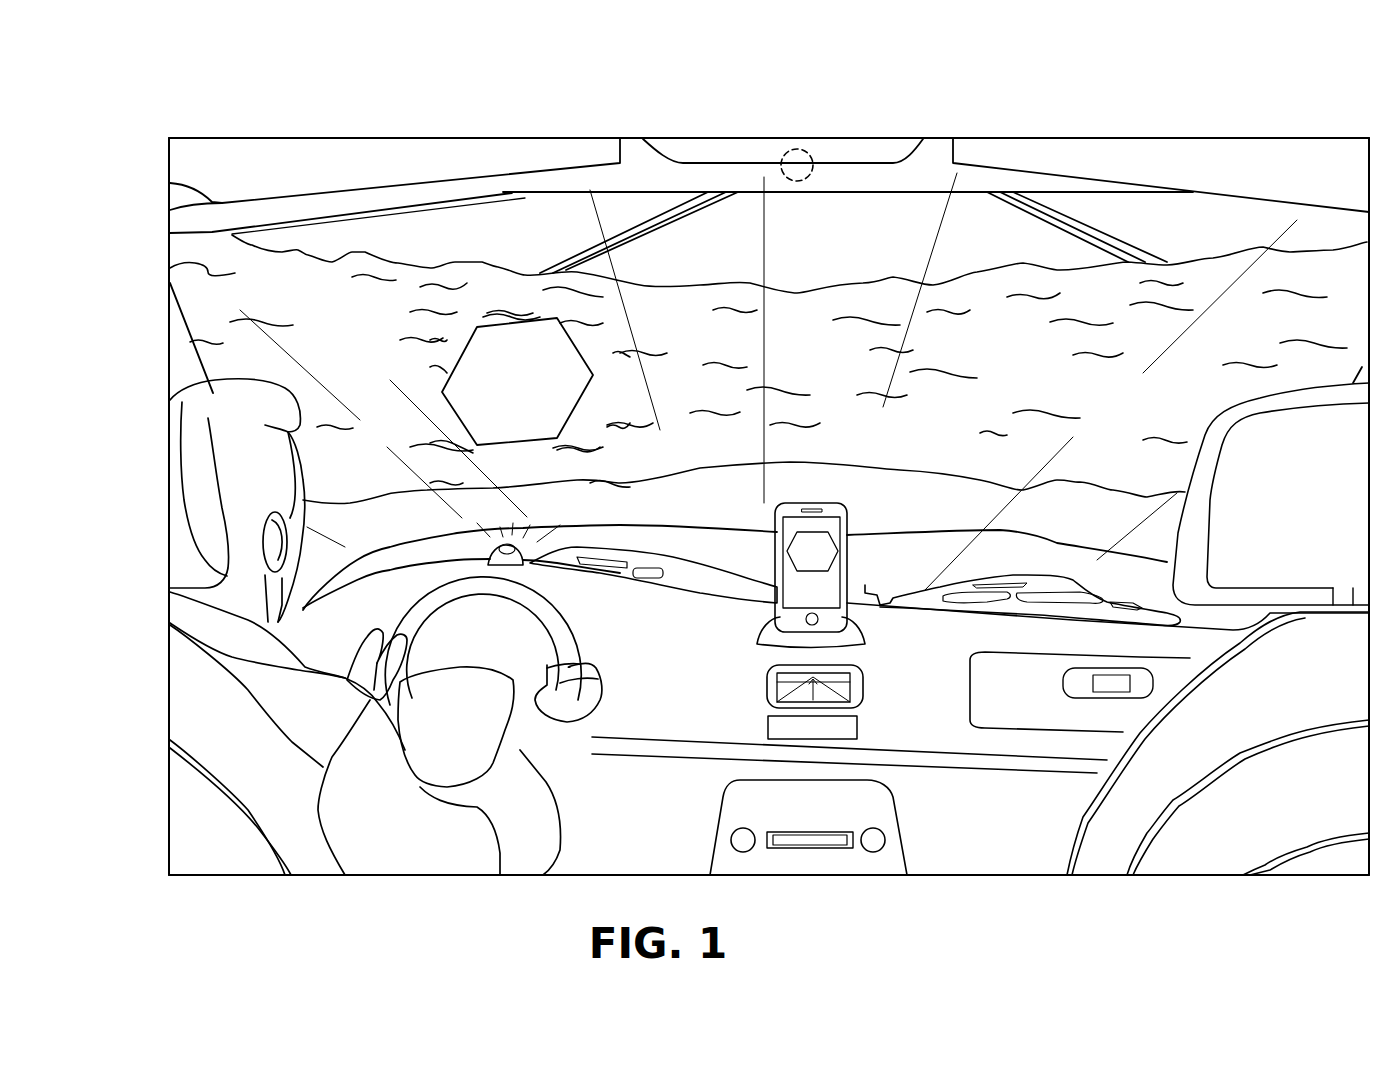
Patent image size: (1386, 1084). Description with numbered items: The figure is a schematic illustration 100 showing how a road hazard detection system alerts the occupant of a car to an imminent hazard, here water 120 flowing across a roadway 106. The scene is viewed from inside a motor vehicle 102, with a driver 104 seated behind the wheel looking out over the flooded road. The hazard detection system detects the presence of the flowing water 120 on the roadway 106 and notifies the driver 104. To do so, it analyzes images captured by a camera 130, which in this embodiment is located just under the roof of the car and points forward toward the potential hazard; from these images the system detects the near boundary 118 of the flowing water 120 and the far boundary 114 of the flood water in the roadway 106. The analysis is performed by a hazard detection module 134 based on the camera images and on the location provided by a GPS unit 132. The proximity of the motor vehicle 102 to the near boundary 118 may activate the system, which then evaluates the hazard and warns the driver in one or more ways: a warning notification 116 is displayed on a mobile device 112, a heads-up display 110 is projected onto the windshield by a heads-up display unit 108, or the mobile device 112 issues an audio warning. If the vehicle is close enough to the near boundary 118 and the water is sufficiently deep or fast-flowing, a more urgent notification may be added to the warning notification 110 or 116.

The schematic illustration 100 is at (257, 97).
The motor vehicle 102 is at (168, 157).
The driver 104 is at (180, 490).
The roadway 106 is at (512, 197).
The heads-up display unit 108 is at (523, 565).
The heads-up display 110 is at (452, 378).
The mobile device 112 is at (848, 523).
The far boundary 114 is at (897, 278).
The warning notification 116 is at (830, 570).
The near boundary 118 is at (932, 462).
The water 120 is at (170, 256).
The camera 130 is at (800, 148).
The GPS unit 132 is at (865, 686).
The hazard detection module 134 is at (858, 727).